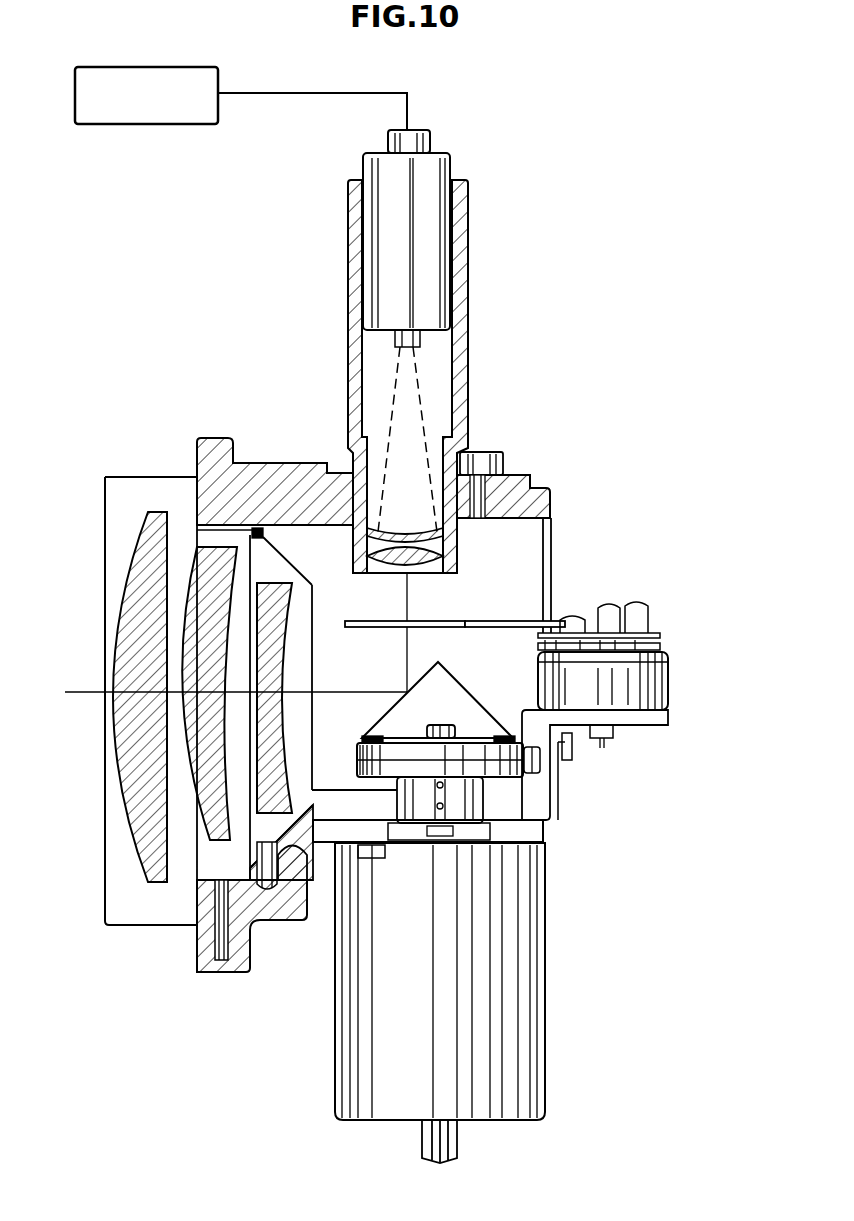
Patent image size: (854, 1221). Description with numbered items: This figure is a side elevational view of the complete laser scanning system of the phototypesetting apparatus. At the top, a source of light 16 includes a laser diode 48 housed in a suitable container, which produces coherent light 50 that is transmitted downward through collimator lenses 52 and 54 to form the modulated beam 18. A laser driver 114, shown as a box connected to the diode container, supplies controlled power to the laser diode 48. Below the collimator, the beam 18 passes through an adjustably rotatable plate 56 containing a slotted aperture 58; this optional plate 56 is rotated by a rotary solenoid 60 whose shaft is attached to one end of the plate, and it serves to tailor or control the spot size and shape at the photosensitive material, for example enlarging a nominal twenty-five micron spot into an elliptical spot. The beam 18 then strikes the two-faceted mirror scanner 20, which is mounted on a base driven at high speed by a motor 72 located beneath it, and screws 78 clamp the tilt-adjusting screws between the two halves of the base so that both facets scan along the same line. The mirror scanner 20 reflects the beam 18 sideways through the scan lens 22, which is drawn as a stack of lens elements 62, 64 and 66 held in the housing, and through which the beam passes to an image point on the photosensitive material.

The laser driver 114 is at (192, 125).
The laser diode 48 is at (448, 172).
The source of light 16 is at (468, 300).
The coherent light 50 is at (448, 392).
The modulated beam 18 is at (410, 600).
The collimator lens 52 is at (408, 530).
The collimator lens 54 is at (395, 572).
The adjustably rotatable plate 56 is at (513, 621).
The slotted aperture 58 is at (392, 629).
The mirror scanner 20 is at (452, 673).
The clamping screws 78 is at (440, 725).
The rotary solenoid 60 is at (668, 686).
The drive motor 72 is at (545, 912).
The lens 66 is at (146, 512).
The lens 64 is at (210, 558).
The lens 62 is at (283, 583).
The scan lens 22 is at (160, 1002).